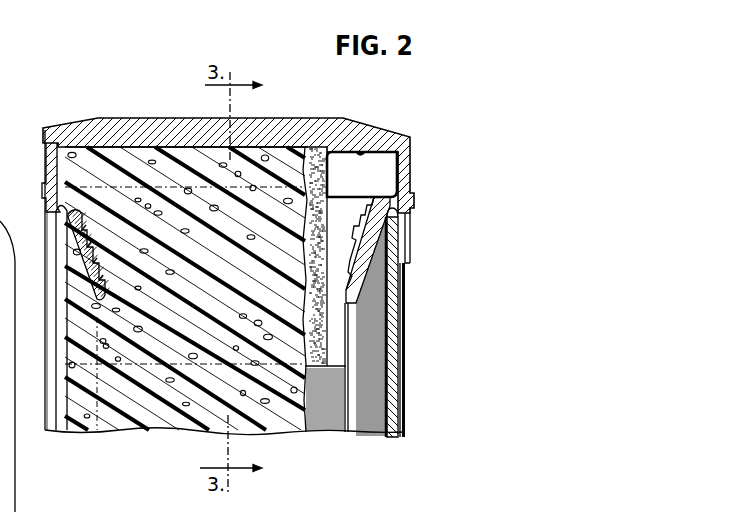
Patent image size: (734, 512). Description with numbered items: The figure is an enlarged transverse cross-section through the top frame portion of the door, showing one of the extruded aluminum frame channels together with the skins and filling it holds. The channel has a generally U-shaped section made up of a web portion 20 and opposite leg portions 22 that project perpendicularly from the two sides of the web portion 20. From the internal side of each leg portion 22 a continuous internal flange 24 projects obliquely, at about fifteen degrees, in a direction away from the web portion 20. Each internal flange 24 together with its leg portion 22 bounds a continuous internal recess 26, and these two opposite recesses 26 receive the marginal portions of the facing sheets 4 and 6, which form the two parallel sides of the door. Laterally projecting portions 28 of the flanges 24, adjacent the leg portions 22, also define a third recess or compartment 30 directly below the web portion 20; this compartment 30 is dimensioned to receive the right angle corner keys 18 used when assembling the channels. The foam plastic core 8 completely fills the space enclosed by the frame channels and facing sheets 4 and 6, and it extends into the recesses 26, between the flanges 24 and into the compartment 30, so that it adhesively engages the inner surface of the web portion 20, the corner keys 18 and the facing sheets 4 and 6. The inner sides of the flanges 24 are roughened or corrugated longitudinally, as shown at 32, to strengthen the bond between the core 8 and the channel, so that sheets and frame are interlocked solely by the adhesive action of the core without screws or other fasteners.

The facing sheet 4 is at (55, 325).
The facing sheet 6 is at (398, 392).
The foam plastic core 8 is at (283, 340).
The right angle key 18 is at (328, 373).
The web portion 20 is at (166, 128).
The leg portion 22 is at (48, 166).
The internal flange 24 is at (364, 236).
The internal recess 26 is at (377, 308).
The laterally projecting portion 28 is at (412, 195).
The third recess or compartment 30 is at (362, 151).
The roughened or corrugated inner side 32 is at (356, 286).